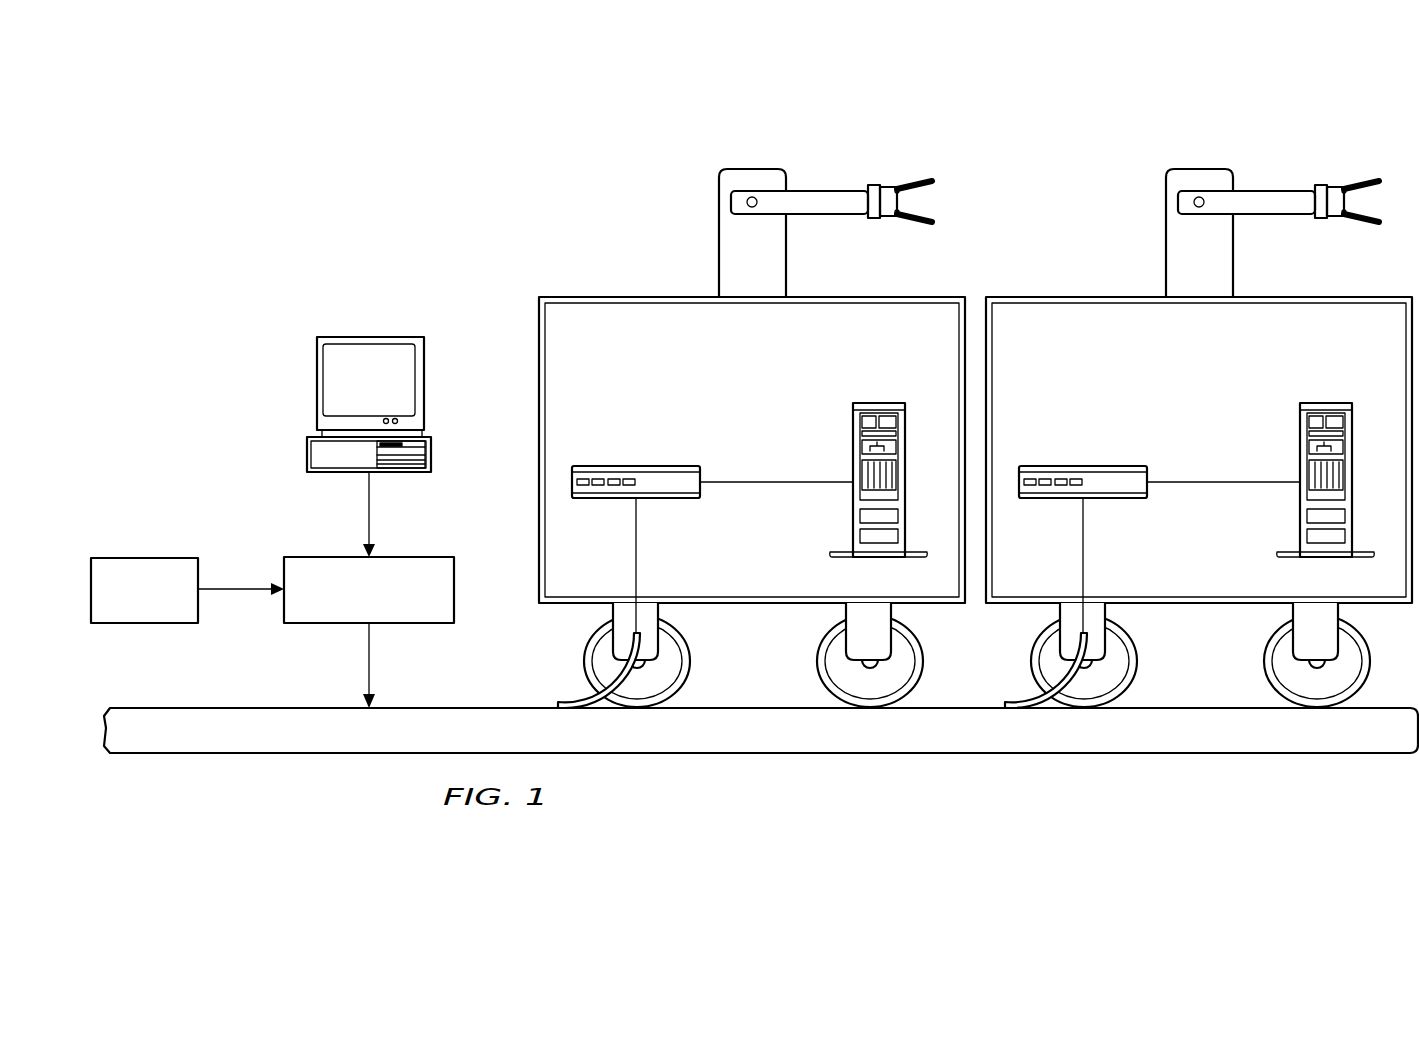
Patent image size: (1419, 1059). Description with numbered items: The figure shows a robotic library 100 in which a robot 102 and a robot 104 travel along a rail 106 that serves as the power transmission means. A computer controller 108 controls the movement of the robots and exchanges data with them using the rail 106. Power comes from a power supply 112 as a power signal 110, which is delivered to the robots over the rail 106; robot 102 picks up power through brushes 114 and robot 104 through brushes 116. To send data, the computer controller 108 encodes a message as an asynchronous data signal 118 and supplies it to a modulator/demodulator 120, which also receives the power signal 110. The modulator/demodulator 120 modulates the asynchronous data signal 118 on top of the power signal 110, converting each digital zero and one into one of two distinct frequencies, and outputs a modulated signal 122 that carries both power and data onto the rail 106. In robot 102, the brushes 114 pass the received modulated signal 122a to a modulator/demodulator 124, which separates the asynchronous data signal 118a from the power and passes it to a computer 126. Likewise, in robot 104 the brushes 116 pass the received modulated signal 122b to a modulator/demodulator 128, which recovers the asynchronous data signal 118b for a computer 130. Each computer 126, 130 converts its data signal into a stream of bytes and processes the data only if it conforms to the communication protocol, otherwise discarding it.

The robotic library 100 is at (279, 184).
The robot 102 is at (661, 247).
The robot 104 is at (1184, 436).
The rail 106 is at (975, 754).
The computer controller 108 is at (355, 337).
The power signal 110 is at (241, 594).
The power supply 112 is at (143, 558).
The brushes 114 is at (570, 697).
The brushes 116 is at (1022, 660).
The asynchronous data signal 118 is at (370, 513).
The asynchronous data signal 118a is at (776, 482).
The asynchronous data signal 118b is at (1219, 428).
The modulator/demodulator 120 is at (455, 587).
The modulated signal 122 is at (366, 667).
The received modulated signal 122a is at (633, 545).
The received modulated signal 122b is at (1104, 565).
The modulator/demodulator 124 is at (626, 466).
The computer 126 is at (879, 403).
The modulator/demodulator 128 is at (1083, 441).
The computer 130 is at (1332, 439).